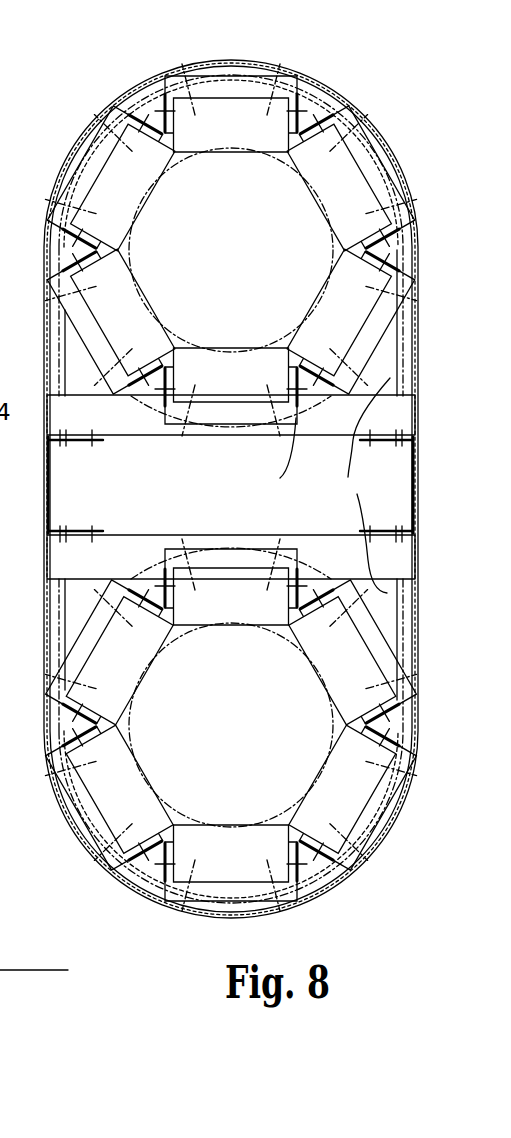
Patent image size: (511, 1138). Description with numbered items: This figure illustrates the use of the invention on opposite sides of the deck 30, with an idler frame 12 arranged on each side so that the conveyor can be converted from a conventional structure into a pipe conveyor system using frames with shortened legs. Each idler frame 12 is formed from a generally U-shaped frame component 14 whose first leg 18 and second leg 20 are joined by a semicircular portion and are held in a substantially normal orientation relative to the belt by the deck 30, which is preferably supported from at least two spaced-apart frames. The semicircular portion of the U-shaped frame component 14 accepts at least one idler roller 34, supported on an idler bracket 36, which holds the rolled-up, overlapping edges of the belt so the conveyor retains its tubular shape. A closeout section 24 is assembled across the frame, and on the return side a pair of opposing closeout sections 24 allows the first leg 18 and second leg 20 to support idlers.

The idler frame 12 is at (182, 49).
The U-shaped frame component 14 is at (373, 132).
The first leg 18 is at (44, 332).
The second leg 20 is at (259, 370).
The closeout section 24 is at (282, 535).
The deck 30 is at (53, 481).
The idler roller 34 is at (133, 794).
The idler bracket 36 is at (206, 903).